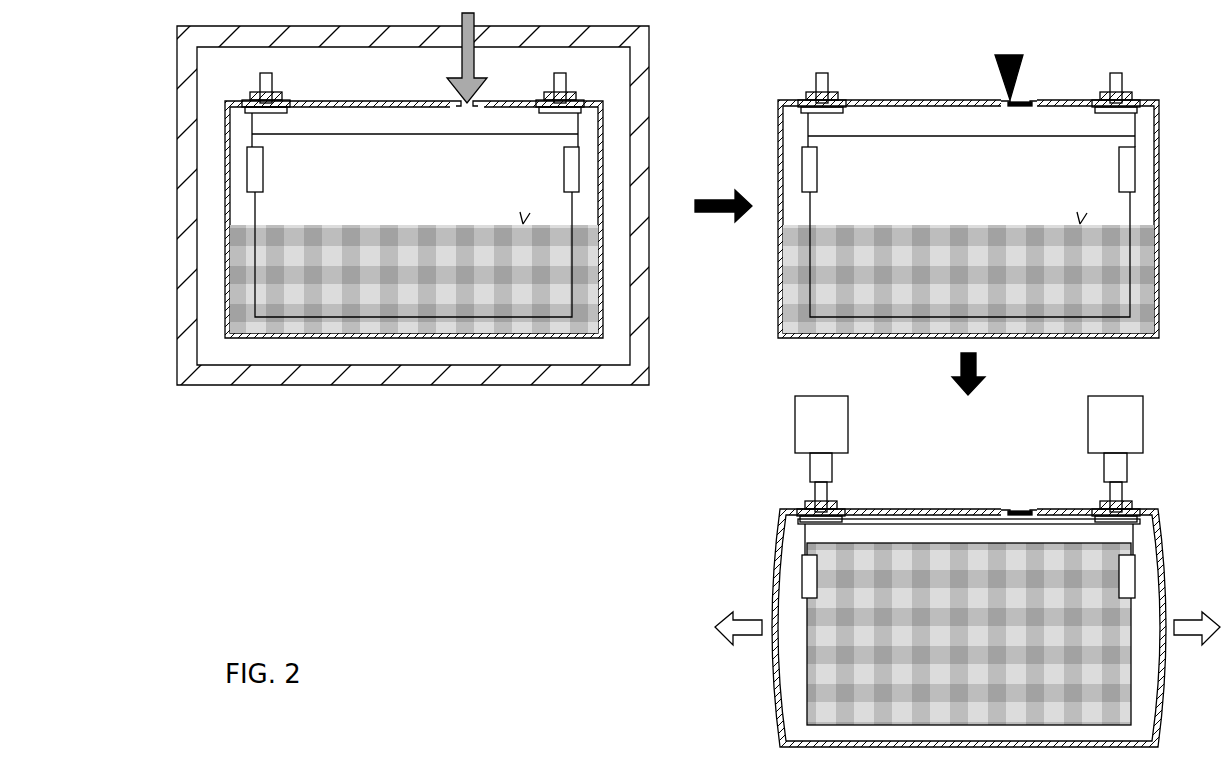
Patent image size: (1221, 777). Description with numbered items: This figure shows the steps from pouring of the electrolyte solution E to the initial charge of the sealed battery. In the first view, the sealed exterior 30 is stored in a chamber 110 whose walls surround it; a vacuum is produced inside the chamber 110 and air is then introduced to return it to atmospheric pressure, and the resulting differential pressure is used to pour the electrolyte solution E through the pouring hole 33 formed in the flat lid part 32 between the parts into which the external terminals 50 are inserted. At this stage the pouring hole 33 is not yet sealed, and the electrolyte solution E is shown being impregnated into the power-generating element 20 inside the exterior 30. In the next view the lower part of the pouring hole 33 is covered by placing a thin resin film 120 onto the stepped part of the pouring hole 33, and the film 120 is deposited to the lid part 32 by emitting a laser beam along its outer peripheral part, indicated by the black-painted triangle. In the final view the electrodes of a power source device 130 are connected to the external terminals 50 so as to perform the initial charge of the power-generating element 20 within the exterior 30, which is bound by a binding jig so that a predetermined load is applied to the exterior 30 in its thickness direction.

The chamber 110 is at (553, 378).
The exterior 30 is at (418, 352).
The lid part 32 is at (598, 99).
The pouring hole 33 is at (466, 108).
The film 120 is at (1027, 100).
The power source device 130 is at (765, 434).
The external terminals 50 is at (808, 490).
The power-generating element 20 is at (822, 667).
The electrolyte solution E is at (463, 62).